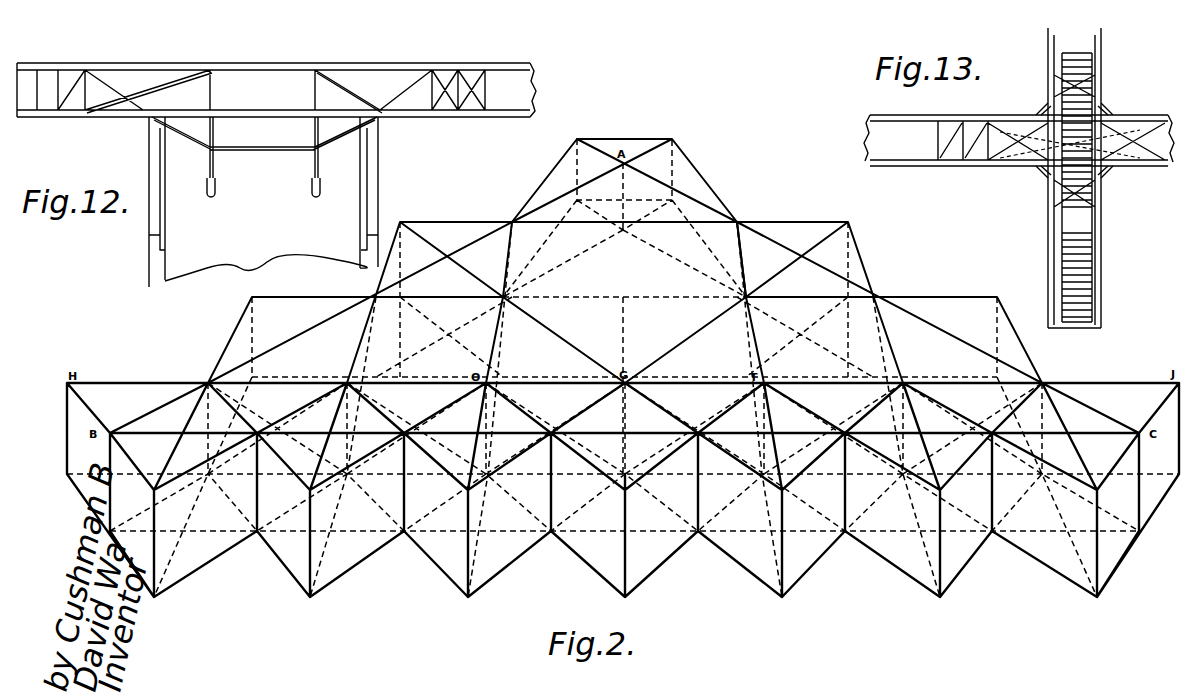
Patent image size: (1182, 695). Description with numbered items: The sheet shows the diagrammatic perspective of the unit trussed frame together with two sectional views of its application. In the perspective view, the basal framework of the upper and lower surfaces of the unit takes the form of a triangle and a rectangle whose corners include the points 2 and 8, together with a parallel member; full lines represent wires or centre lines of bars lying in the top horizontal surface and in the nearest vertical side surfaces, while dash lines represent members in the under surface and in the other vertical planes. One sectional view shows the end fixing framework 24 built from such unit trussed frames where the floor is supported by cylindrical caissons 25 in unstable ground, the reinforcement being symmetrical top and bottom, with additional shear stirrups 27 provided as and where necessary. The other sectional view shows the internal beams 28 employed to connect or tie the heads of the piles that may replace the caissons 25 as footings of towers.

In FIG. 2, the rectangle corner point 2 is at (535, 180).
In FIG. 2, the rectangle corner point 8 is at (741, 253).
In FIG. 12, the end fixing framework 24 is at (450, 70).
In FIG. 12, the cylindrical caisson 25 is at (168, 218).
In FIG. 12, the shear stirrup 27 is at (216, 186).
In FIG. 13, the shear stirrup 27 is at (1058, 265).
In FIG. 13, the internal beam 28 is at (1054, 84).